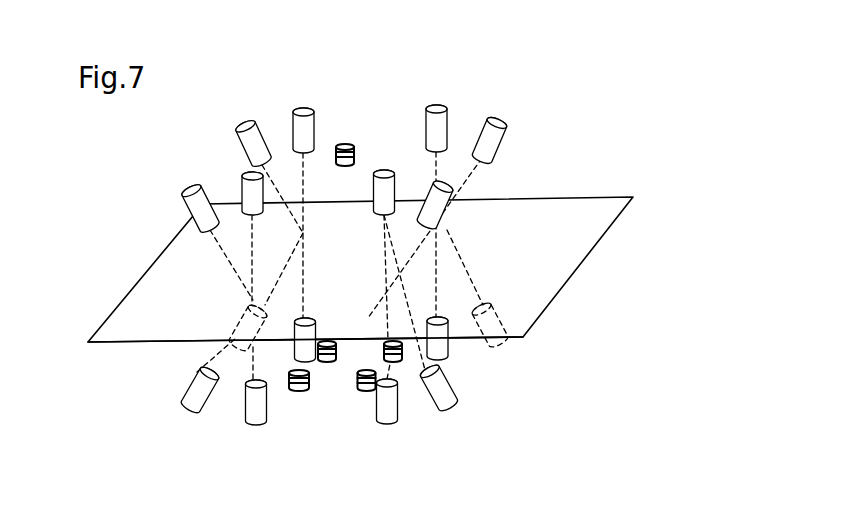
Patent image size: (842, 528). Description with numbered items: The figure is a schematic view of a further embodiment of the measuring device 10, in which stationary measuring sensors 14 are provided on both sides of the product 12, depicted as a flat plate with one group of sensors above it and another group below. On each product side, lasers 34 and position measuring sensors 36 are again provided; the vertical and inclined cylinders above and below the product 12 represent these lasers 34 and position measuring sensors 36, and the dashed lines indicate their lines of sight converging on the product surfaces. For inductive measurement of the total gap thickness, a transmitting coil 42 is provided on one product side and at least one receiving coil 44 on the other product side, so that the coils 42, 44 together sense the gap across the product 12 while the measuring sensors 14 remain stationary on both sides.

The measuring device 10 is at (565, 102).
The product 12 is at (590, 267).
The measuring sensors 14 is at (138, 237).
The lasers 34 is at (440, 93).
The position measuring sensors 36 is at (508, 115).
The transmitting coil 42 is at (350, 138).
The receiving coil 44 is at (303, 396).